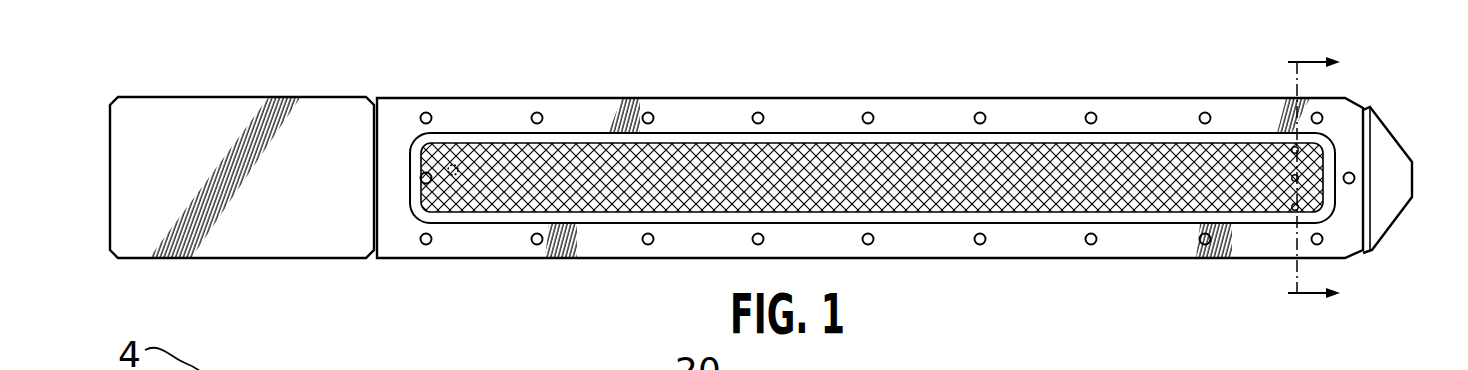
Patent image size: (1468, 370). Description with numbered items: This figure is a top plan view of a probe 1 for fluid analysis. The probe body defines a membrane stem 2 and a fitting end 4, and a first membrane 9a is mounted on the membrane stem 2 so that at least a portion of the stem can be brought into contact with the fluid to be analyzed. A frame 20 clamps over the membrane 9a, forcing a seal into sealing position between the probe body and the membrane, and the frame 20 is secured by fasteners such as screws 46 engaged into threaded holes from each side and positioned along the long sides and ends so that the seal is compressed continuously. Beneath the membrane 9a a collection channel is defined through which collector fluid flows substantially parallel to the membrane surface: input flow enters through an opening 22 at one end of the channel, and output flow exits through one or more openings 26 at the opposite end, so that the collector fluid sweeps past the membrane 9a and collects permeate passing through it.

The probe 1 is at (598, 85).
The membrane stem 2 is at (1403, 246).
The fitting end 4 is at (218, 104).
The first membrane 9a is at (922, 185).
The frame 20 is at (707, 107).
The opening 22 is at (449, 164).
The openings 26 is at (1292, 208).
The screws 46 is at (537, 246).